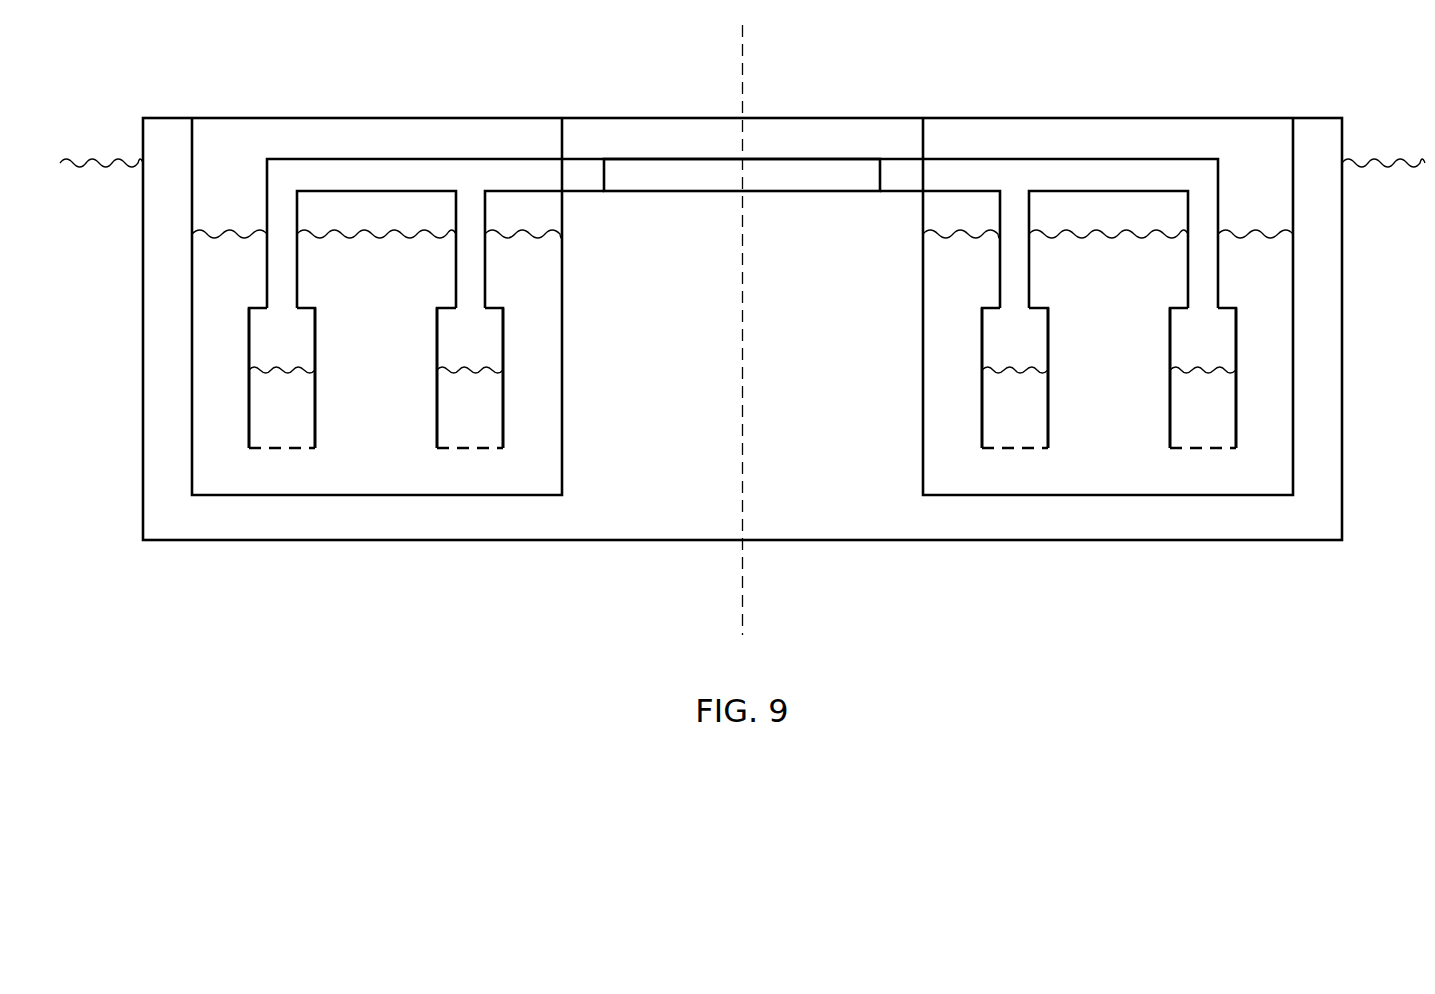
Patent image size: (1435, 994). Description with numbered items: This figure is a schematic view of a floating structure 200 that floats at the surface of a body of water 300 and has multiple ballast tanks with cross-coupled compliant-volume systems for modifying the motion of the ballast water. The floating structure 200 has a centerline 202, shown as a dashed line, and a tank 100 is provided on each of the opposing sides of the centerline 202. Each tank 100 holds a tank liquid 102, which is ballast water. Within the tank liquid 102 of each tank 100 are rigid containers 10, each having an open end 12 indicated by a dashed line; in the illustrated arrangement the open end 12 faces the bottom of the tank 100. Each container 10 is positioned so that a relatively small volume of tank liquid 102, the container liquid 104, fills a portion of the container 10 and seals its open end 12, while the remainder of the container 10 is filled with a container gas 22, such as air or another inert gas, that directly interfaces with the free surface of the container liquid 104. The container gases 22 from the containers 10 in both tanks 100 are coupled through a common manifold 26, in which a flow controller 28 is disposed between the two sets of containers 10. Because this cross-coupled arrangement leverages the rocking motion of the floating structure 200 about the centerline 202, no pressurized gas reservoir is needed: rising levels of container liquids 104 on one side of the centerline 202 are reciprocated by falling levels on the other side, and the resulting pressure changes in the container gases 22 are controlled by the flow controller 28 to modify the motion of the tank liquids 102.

The floating structure 200 is at (165, 118).
The body of water 300 is at (100, 153).
The tank 100 is at (192, 160).
The tank liquid 102 is at (361, 413).
The common manifold 26 is at (582, 158).
The flow controller 28 is at (690, 158).
The centerline 202 is at (743, 63).
The container gas 22 is at (271, 345).
The container 10 is at (249, 352).
The container liquid 104 is at (282, 402).
The open end 12 is at (270, 452).